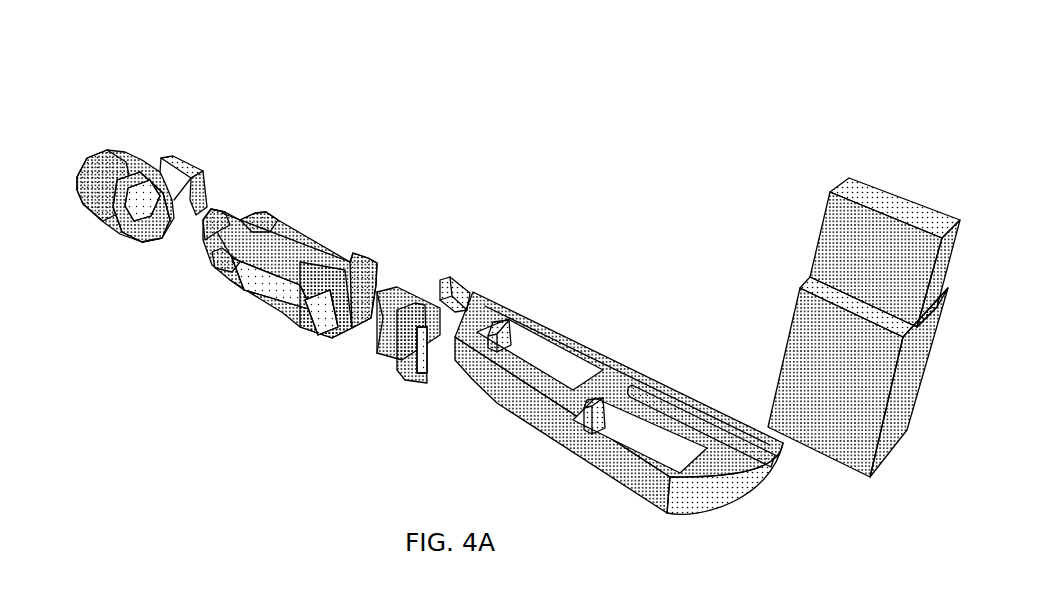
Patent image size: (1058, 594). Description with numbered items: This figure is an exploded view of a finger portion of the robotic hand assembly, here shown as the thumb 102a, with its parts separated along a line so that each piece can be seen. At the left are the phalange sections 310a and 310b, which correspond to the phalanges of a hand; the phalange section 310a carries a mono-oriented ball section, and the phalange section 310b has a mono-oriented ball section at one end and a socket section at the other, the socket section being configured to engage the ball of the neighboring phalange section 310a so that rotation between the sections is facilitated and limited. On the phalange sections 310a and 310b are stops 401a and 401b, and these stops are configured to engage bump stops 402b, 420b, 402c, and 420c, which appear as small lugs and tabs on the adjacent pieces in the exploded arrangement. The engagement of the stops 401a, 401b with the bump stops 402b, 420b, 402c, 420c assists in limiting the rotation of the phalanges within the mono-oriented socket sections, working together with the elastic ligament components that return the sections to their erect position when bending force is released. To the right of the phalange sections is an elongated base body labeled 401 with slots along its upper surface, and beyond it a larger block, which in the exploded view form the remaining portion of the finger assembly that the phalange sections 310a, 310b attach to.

The thumb 102a is at (467, 152).
The phalange section 310a is at (102, 150).
The phalange section 310b is at (300, 255).
The base 401 is at (612, 376).
The stop 401a is at (108, 224).
The stop 401b is at (286, 318).
The bump stop 402b is at (205, 221).
The bump stop 402c is at (379, 354).
The bump stop 420b is at (214, 258).
The bump stop 420c is at (380, 304).